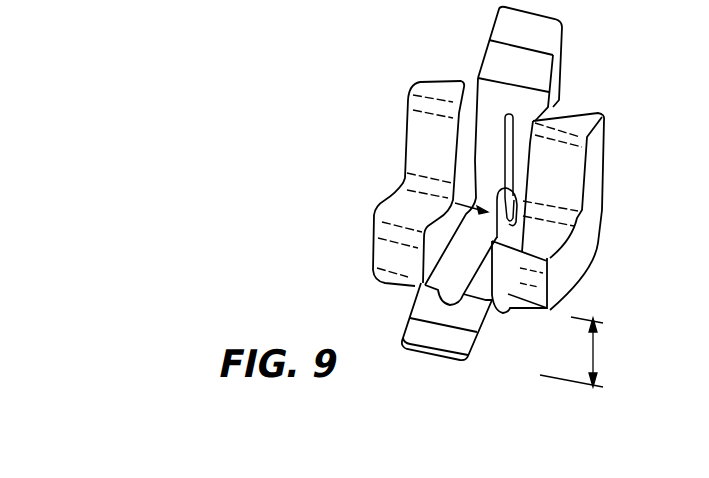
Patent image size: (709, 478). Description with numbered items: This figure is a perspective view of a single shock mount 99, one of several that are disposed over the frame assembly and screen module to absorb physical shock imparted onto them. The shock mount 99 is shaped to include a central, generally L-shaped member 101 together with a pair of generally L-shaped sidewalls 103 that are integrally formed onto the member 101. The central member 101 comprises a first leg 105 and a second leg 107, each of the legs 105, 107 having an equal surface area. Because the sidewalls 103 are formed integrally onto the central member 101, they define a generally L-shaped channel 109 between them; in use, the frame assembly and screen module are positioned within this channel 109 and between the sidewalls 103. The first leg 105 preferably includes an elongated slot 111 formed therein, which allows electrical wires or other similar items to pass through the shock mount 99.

The shock mount 99 is at (343, 247).
The central, generally L-shaped member 101 is at (525, 101).
The generally L-shaped sidewalls 103 is at (427, 130).
The first leg 105 is at (508, 27).
The second leg 107 is at (430, 335).
The generally L-shaped channel 109 is at (393, 198).
The elongated slot 111 is at (507, 165).